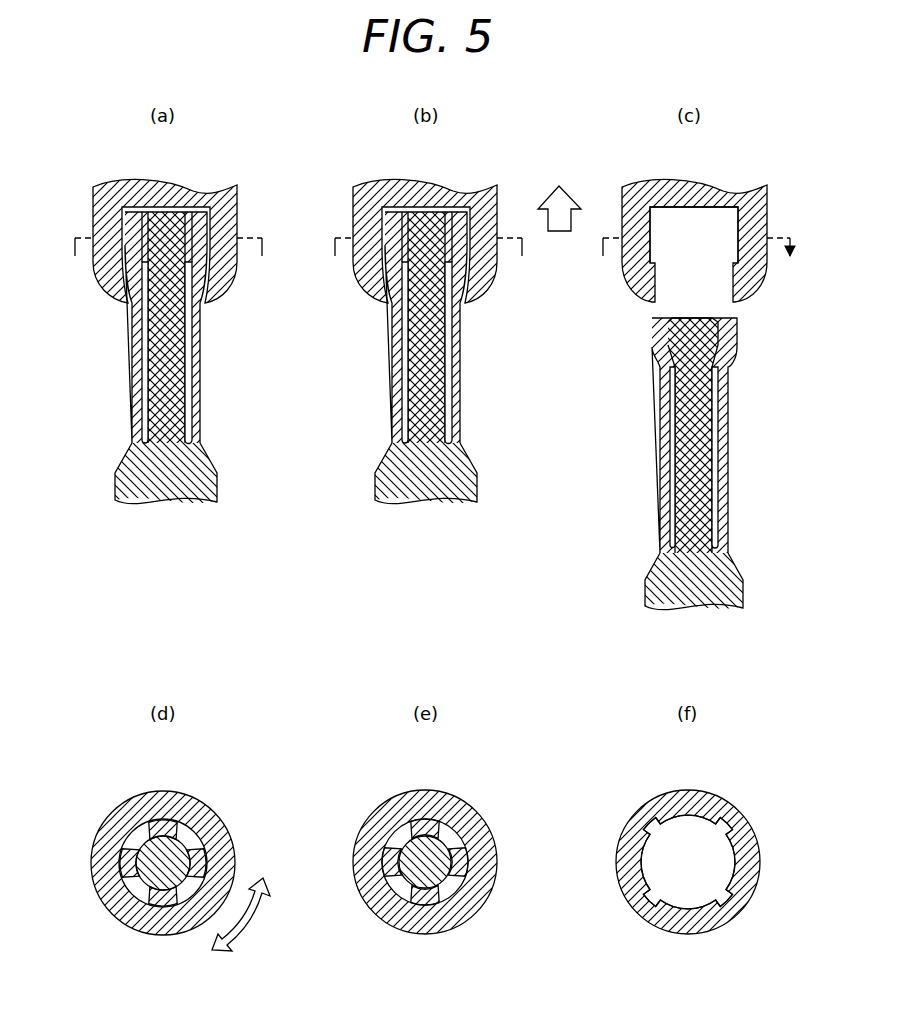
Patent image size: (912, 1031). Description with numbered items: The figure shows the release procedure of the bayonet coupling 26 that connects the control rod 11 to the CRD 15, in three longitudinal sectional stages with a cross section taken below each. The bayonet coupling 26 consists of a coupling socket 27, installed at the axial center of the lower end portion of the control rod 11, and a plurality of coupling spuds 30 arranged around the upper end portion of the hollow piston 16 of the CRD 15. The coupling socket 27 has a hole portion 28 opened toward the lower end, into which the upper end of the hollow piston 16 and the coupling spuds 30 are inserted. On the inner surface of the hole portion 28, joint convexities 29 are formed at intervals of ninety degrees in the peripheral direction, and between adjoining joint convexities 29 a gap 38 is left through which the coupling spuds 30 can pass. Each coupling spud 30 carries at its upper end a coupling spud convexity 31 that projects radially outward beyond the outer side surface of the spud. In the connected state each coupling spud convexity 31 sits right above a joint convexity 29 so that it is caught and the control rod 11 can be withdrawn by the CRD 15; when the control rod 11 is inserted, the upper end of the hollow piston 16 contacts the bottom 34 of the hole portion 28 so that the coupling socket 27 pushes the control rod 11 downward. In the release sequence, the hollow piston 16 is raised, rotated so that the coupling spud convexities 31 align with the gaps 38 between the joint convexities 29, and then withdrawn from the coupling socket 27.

The control rod 11 is at (207, 200).
The CRD 15 is at (115, 484).
The hollow piston 16 is at (203, 485).
The bayonet coupling 26 is at (86, 192).
The coupling socket 27 is at (238, 266).
The hole portion 28 is at (206, 305).
The joint convexities 29 is at (126, 300).
The coupling spuds 30 is at (199, 408).
The coupling spud convexities 31 is at (200, 227).
The bottom 34 is at (712, 208).
The gap 38 is at (688, 822).